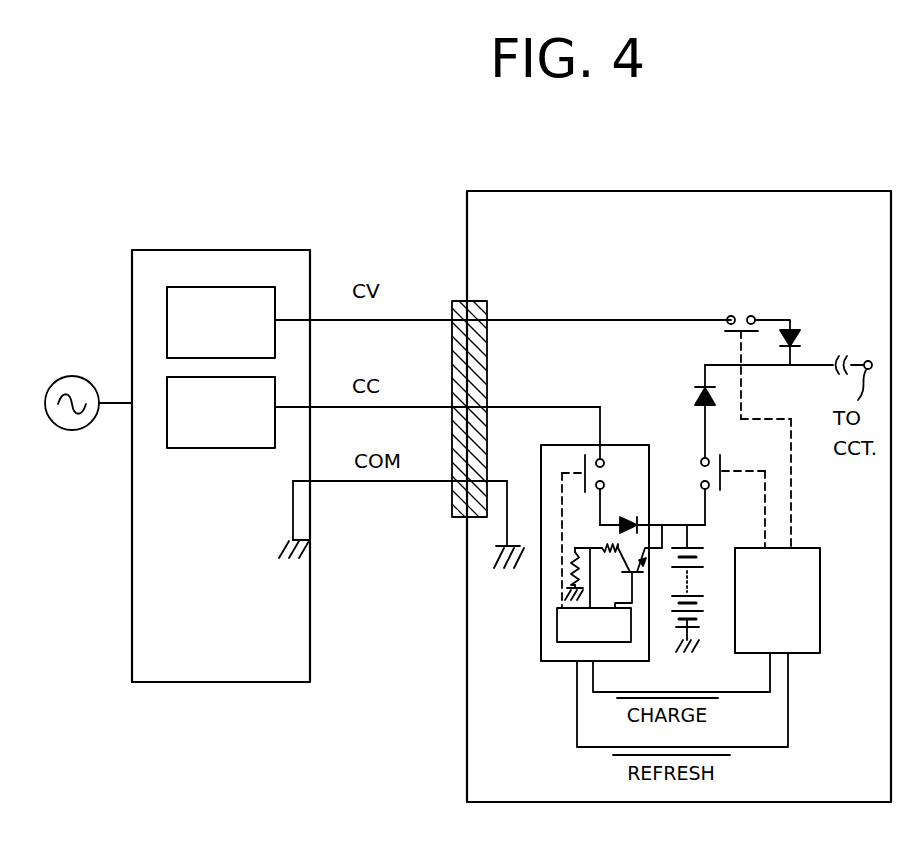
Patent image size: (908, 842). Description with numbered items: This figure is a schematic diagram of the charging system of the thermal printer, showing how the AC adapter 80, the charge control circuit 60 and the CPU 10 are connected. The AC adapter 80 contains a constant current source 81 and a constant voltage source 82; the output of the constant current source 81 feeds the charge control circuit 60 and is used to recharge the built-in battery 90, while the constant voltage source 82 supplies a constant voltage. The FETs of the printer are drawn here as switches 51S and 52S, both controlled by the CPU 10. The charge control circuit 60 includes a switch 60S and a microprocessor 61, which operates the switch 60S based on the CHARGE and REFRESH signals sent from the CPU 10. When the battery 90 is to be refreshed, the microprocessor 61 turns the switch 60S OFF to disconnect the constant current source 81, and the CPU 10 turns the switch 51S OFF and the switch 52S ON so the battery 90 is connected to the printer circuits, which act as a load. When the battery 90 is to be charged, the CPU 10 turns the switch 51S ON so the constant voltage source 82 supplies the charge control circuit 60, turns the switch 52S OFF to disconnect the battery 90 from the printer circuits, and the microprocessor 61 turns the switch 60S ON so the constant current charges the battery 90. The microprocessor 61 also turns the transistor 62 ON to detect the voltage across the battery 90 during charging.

The CPU 10 is at (777, 600).
The switch 51S is at (732, 308).
The switch 52S is at (703, 472).
The charge control circuit 60 is at (541, 623).
The switch 60S is at (607, 462).
The microprocessor 61 is at (557, 632).
The transistor 62 is at (641, 580).
The AC adapter 80 is at (265, 250).
The constant current source 81 is at (235, 448).
The constant voltage source 82 is at (200, 287).
The battery 90 is at (700, 562).